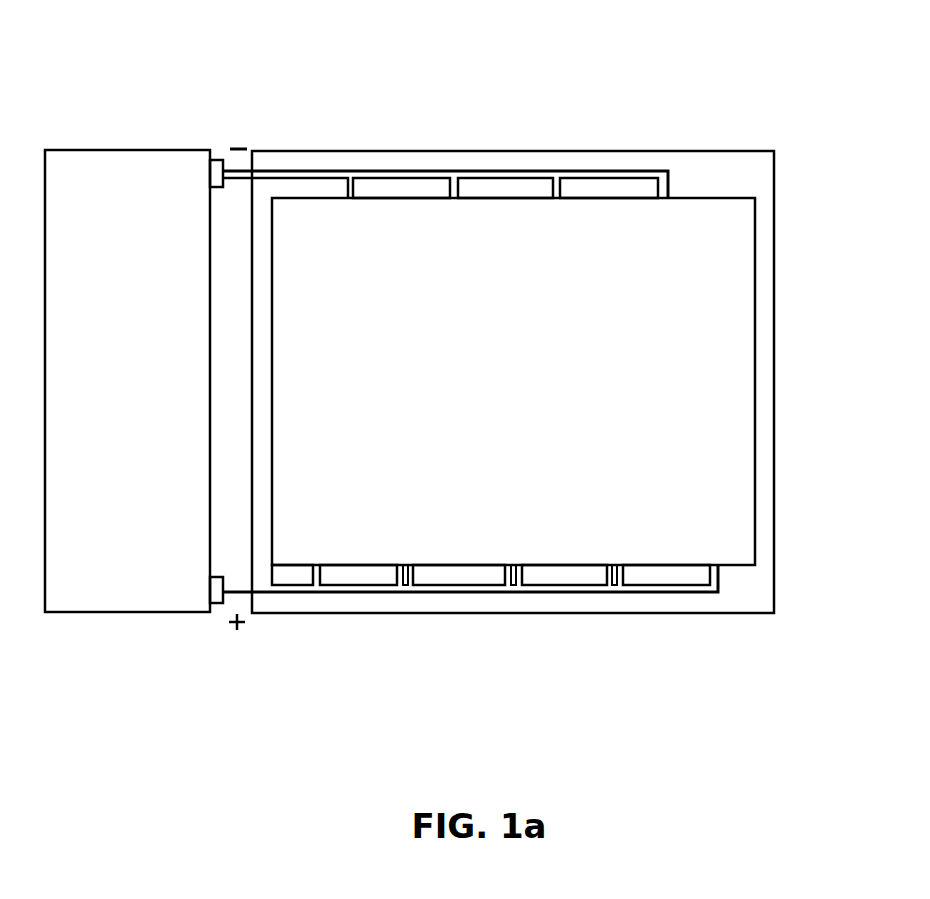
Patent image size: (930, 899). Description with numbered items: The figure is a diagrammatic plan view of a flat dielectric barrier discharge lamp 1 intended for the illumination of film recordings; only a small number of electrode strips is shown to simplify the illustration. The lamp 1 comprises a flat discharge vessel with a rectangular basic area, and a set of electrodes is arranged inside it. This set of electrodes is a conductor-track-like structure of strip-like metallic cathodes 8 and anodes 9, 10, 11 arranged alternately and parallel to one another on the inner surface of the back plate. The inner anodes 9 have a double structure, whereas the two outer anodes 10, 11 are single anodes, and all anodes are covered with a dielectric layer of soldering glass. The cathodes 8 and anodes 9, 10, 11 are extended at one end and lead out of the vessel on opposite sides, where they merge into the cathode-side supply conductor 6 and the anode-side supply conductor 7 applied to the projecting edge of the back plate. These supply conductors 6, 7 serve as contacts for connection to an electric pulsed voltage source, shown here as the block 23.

The dielectric barrier discharge lamp 1 is at (790, 126).
The cathode-side supply conductor 6 is at (272, 592).
The anode-side supply conductor 7 is at (281, 170).
The cathode strips 8 is at (350, 120).
The anodes 9 is at (407, 650).
The outer anode 10 is at (716, 650).
The outer anode 11 is at (317, 650).
The power supply / battery 23 is at (118, 580).